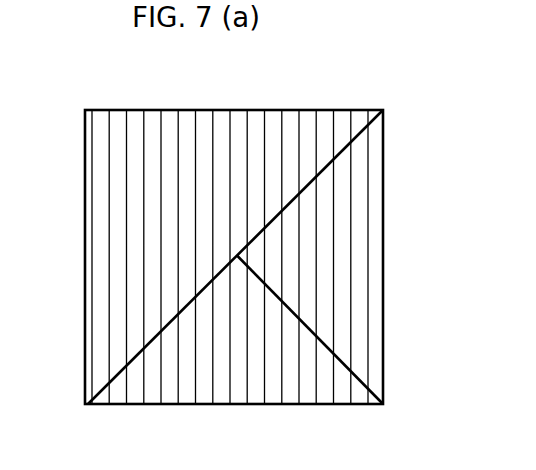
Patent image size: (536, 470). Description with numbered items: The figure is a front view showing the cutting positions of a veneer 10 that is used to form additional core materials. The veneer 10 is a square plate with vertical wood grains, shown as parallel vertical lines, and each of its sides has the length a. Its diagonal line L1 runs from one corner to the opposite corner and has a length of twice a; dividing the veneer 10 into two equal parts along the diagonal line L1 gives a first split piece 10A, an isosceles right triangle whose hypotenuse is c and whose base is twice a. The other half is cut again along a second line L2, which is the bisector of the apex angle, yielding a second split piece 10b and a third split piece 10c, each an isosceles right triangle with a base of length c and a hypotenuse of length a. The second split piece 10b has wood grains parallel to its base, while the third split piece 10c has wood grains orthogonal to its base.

The veneer 10 is at (68, 153).
The first split piece 10A is at (168, 182).
The second split piece 10b is at (343, 178).
The third split piece 10c is at (240, 335).
The diagonal line L1 is at (270, 213).
The second cutting line L2 is at (323, 346).
The side length a is at (326, 166).
The base length c is at (237, 109).